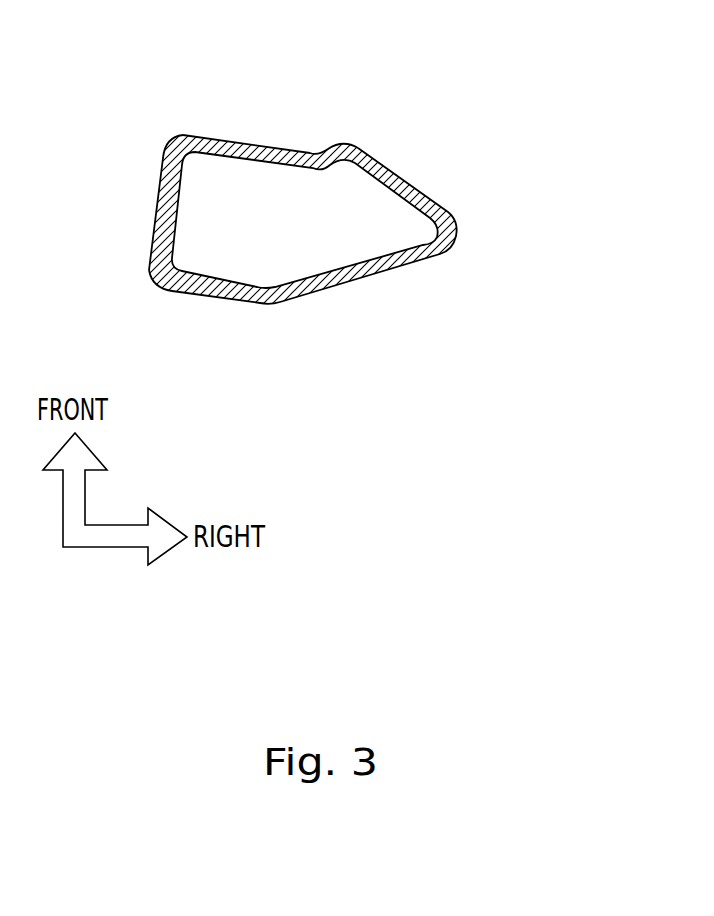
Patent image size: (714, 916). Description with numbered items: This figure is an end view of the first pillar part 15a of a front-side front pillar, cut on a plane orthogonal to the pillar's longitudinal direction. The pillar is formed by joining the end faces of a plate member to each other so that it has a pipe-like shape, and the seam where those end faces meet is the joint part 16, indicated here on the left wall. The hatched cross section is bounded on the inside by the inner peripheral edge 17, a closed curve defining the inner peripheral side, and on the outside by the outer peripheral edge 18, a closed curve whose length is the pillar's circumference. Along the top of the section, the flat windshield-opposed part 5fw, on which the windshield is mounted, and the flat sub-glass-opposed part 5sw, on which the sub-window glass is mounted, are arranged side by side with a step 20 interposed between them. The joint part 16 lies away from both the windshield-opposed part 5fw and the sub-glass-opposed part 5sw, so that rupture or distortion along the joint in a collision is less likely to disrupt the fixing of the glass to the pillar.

The first pillar part 15a is at (477, 78).
The windshield-opposed part 5fw is at (258, 150).
The sub-glass-opposed part 5sw is at (409, 191).
The step 20 is at (332, 144).
The joint part 16 is at (150, 208).
The inner peripheral edge 17 is at (290, 282).
The outer peripheral edge 18 is at (343, 286).